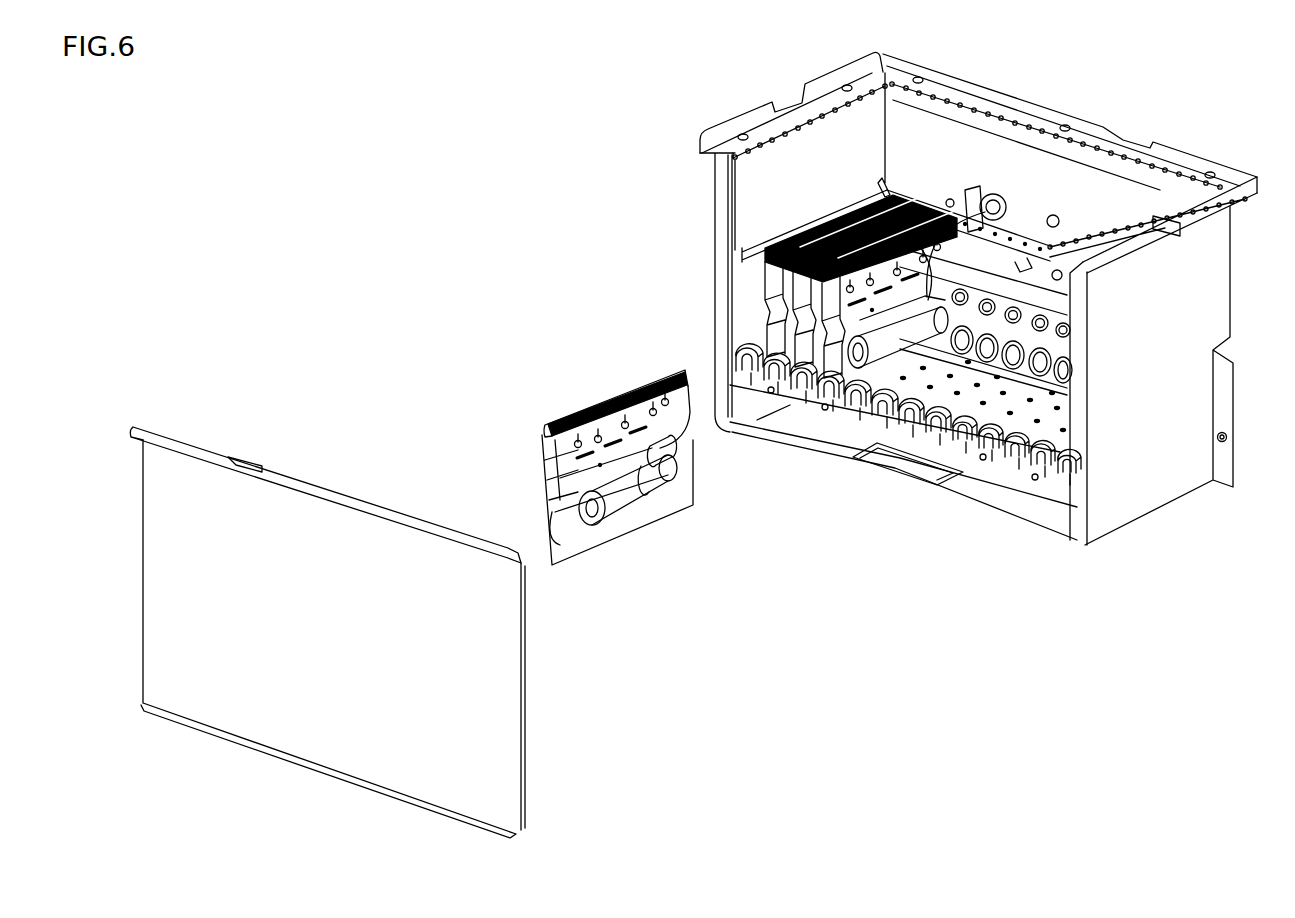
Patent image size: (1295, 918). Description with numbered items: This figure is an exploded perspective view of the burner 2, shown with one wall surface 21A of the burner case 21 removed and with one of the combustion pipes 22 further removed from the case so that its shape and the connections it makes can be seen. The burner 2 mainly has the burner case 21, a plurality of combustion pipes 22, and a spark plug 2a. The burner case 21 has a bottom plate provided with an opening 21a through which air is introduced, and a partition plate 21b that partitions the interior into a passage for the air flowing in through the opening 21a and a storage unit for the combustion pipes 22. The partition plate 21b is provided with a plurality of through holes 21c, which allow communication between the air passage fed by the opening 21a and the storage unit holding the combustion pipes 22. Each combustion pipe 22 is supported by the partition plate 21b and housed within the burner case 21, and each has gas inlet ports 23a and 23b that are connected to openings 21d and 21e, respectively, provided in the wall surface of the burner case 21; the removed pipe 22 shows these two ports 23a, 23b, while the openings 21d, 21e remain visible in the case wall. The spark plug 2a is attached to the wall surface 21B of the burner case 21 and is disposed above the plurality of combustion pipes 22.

The burner 2 is at (1228, 104).
The spark plug 2a is at (960, 298).
The burner case 21 is at (1150, 192).
The front cover panel 21A is at (490, 765).
The wall surface 21B is at (913, 125).
The opening 21a is at (920, 470).
The partition plate 21b is at (873, 410).
The through holes 21c is at (1037, 422).
The opening 21d is at (1003, 292).
The opening 21e is at (970, 313).
The combustion pipes 22 is at (607, 394).
The gas inlet port 23a is at (683, 480).
The gas inlet port 23b is at (677, 447).